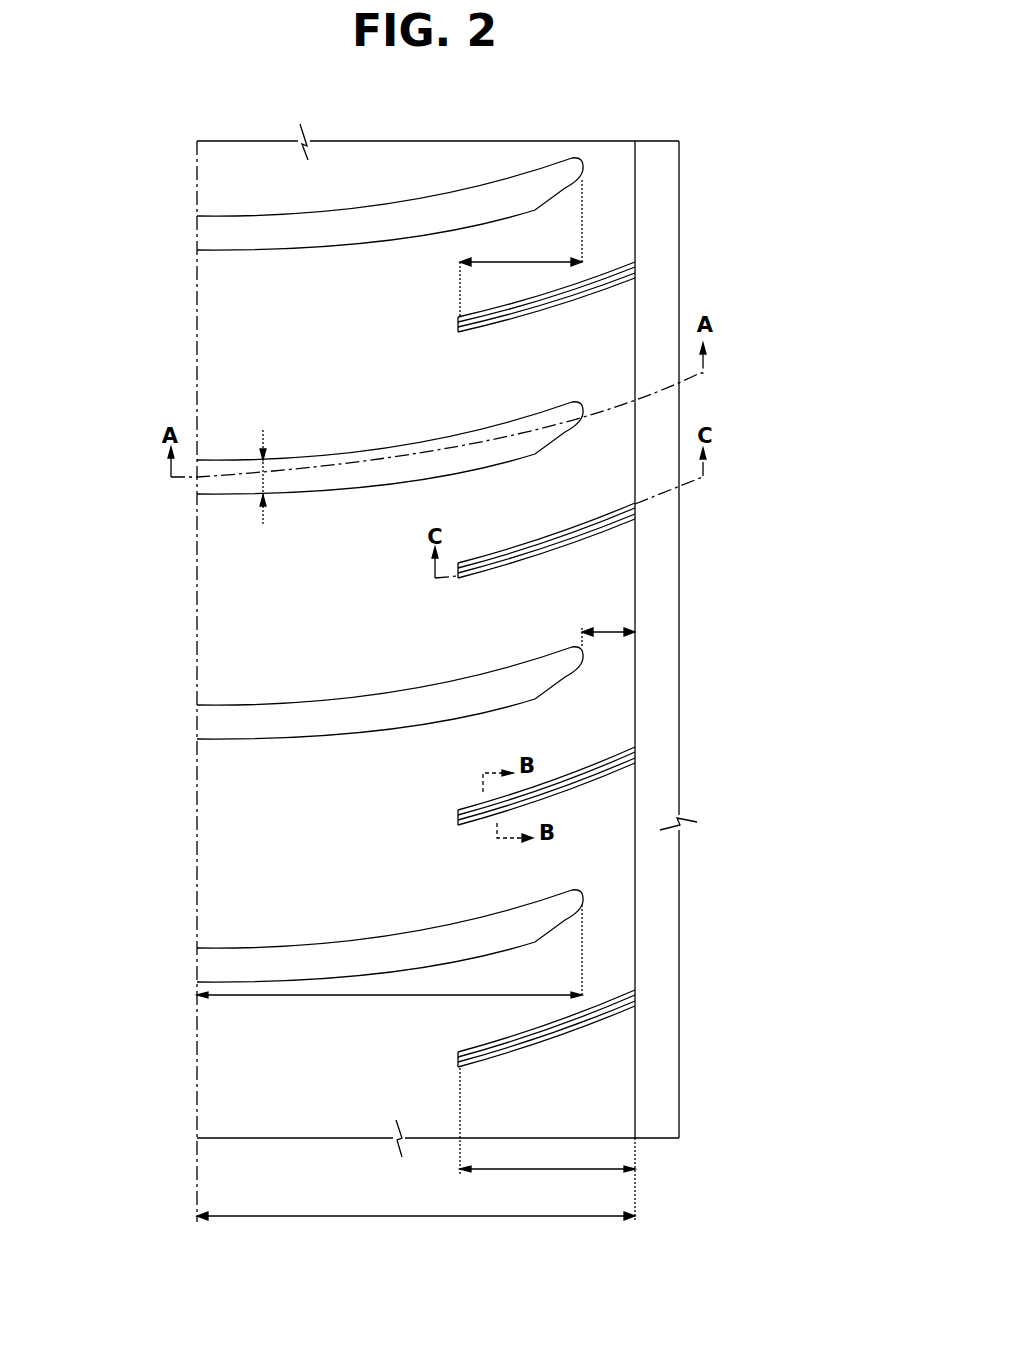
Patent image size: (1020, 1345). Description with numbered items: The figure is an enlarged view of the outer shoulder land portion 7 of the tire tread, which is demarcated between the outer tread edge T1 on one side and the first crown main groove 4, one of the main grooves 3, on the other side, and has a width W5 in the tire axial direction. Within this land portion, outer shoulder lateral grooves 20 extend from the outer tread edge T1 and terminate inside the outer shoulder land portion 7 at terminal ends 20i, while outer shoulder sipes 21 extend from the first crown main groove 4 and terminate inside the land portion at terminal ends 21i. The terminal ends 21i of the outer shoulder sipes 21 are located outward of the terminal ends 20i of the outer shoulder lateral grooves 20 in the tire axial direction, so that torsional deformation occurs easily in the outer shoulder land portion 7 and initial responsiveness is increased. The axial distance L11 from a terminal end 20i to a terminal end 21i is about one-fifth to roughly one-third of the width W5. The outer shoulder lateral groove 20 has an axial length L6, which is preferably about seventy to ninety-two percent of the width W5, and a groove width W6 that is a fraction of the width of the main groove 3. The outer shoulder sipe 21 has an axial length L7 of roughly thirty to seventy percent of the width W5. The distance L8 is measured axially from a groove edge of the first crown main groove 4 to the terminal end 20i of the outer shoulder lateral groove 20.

The outer tread edge T1 is at (196, 177).
The outer shoulder land portion 7 is at (390, 267).
The main groove 3 is at (669, 613).
The first crown main groove 4 is at (657, 175).
The outer shoulder lateral groove 20 is at (305, 230).
The terminal end of outer shoulder lateral groove 20i is at (583, 167).
The outer shoulder sipe 21 is at (603, 273).
The terminal end of outer shoulder sipe 21i is at (458, 335).
The distance L11 is at (521, 248).
The groove width W6 is at (258, 498).
The distance L8 is at (612, 628).
The length L6 is at (389, 967).
The length L7 is at (547, 1145).
The width W5 is at (416, 1230).